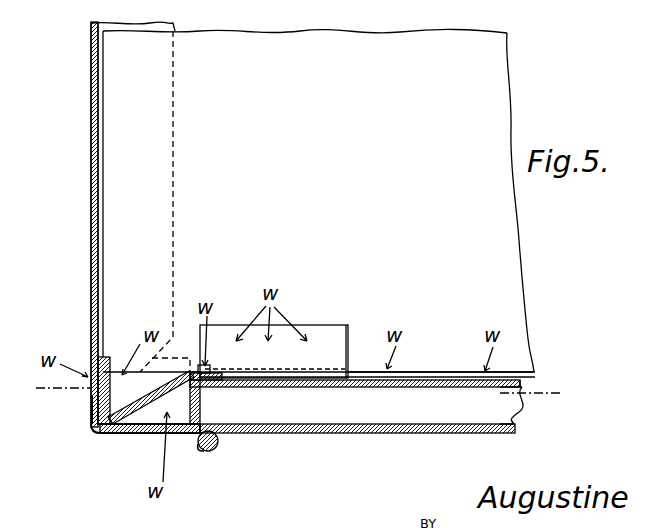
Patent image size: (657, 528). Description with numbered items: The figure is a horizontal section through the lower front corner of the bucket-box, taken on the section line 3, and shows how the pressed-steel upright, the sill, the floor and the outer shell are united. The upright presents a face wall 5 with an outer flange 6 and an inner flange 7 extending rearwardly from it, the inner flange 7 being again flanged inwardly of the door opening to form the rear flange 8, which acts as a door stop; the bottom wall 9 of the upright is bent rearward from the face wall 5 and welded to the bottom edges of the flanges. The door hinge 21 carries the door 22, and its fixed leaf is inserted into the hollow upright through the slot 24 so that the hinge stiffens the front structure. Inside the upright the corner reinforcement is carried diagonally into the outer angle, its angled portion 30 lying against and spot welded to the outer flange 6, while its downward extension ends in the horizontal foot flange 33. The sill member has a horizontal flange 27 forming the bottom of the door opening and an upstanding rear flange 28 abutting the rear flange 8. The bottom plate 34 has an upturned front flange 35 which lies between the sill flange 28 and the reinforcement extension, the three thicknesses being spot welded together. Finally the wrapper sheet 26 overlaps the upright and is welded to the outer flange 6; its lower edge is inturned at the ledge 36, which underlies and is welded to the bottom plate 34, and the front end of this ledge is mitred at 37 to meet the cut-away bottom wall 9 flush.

The section line 3 is at (296, 391).
The face wall 5 is at (152, 436).
The outer flange 6 is at (95, 412).
The inner flange 7 is at (177, 434).
The rear flange 8 is at (214, 378).
The bottom wall 9 is at (122, 434).
The door hinge 21 is at (220, 448).
The door 22 is at (403, 432).
The slot 24 is at (198, 449).
The wrapper sheet 26 is at (92, 170).
The horizontal flange 27 is at (525, 413).
The upstanding rear flange 28 is at (425, 378).
The angled portion 30 is at (110, 370).
The foot flange 33 is at (340, 332).
The bottom plate 34 is at (508, 241).
The upturned front flange 35 is at (454, 374).
The inturned ledge 36 is at (152, 147).
The mitre 37 is at (97, 424).